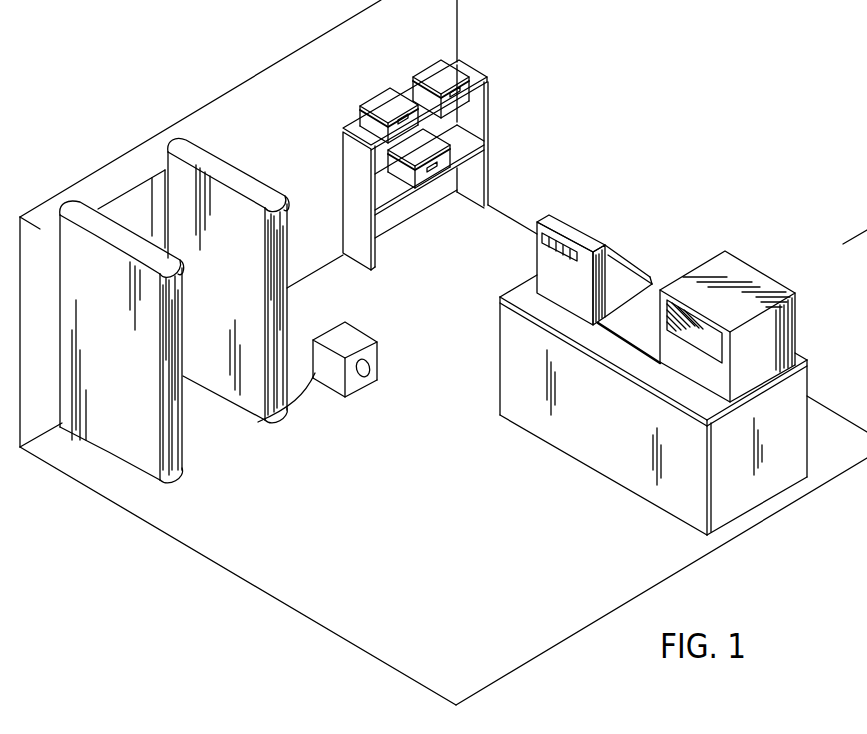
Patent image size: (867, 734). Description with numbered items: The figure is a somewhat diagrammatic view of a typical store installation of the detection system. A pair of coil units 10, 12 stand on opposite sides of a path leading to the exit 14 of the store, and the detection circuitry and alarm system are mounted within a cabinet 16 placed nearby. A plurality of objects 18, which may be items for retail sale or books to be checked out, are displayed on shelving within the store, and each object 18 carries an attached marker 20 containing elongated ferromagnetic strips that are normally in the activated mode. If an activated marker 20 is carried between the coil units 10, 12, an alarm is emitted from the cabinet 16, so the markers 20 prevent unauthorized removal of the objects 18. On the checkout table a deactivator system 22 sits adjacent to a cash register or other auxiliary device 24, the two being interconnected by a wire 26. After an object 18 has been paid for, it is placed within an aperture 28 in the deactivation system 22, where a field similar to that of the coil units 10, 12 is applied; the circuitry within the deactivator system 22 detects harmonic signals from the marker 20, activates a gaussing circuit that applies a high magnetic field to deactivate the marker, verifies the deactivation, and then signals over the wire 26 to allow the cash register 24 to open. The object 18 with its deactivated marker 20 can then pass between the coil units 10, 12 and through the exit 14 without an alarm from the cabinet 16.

The coil unit 10 is at (121, 360).
The coil unit 12 is at (246, 298).
The exit 14 is at (127, 208).
The cabinet 16 is at (363, 343).
The objects 18 is at (423, 70).
The marker 20 is at (395, 110).
The deactivator system 22 is at (736, 313).
The cash register 24 is at (582, 290).
The wire 26 is at (624, 343).
The aperture 28 is at (712, 346).